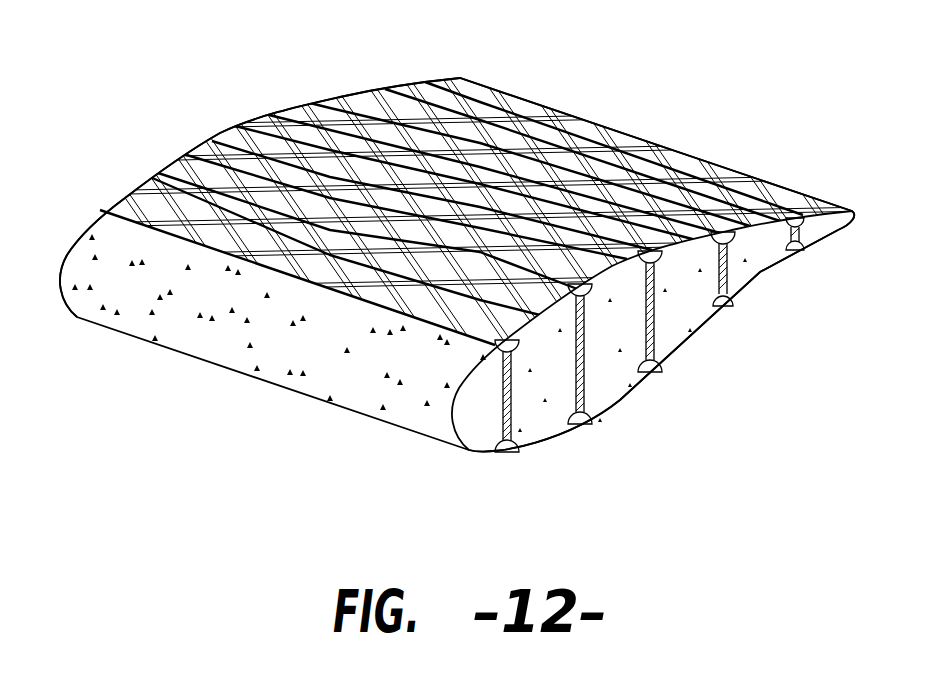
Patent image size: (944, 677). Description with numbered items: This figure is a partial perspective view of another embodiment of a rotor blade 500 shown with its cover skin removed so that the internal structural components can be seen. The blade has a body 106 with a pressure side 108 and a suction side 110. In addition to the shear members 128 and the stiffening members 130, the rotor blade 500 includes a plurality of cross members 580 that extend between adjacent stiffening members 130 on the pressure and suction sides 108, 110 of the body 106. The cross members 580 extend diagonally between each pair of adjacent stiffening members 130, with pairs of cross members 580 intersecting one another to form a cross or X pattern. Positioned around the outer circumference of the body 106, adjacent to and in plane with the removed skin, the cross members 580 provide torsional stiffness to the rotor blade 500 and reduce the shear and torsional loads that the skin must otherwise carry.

The rotor blade 500 is at (686, 80).
The suction side 110 is at (487, 103).
The body 106 is at (213, 330).
The pressure side 108 is at (605, 413).
The shear members 128 is at (713, 280).
The stiffening members 130 is at (125, 190).
The cross members 580 is at (177, 187).